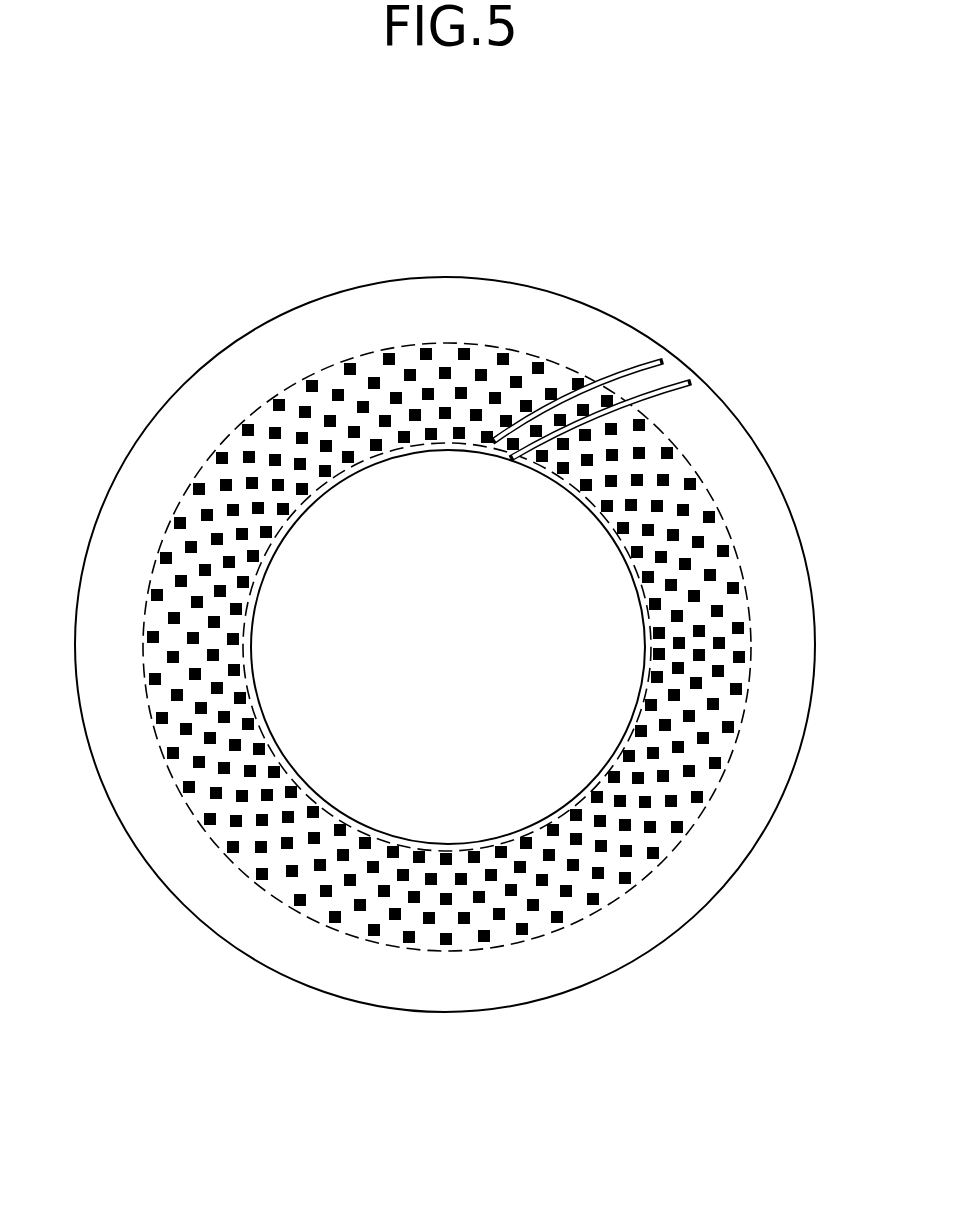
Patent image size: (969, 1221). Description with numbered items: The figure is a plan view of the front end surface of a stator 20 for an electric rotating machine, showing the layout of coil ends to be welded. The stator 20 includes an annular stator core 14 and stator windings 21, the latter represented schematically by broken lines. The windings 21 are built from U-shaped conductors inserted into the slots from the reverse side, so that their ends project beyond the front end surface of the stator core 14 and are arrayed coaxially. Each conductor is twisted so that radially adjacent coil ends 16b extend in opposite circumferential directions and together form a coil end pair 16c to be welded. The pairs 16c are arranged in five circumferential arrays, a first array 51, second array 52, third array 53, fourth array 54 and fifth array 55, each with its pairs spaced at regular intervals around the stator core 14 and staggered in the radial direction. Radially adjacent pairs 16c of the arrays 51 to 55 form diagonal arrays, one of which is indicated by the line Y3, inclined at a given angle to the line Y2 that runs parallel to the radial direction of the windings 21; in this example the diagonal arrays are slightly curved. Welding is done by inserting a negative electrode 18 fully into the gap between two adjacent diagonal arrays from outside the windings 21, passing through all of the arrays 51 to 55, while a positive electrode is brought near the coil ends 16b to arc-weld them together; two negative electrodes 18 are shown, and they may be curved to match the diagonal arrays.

The stator core 14 is at (299, 305).
The stator 20 is at (443, 256).
The stator windings 21 is at (728, 518).
The negative electrode 18 is at (660, 360).
The coil end 16b is at (573, 368).
The coil end pair 16c is at (570, 383).
The first array 51 is at (280, 407).
The second array 52 is at (277, 437).
The third array 53 is at (252, 487).
The fourth array 54 is at (280, 490).
The fifth array 55 is at (300, 508).
The line Y2 is at (470, 471).
The line Y3 is at (414, 463).